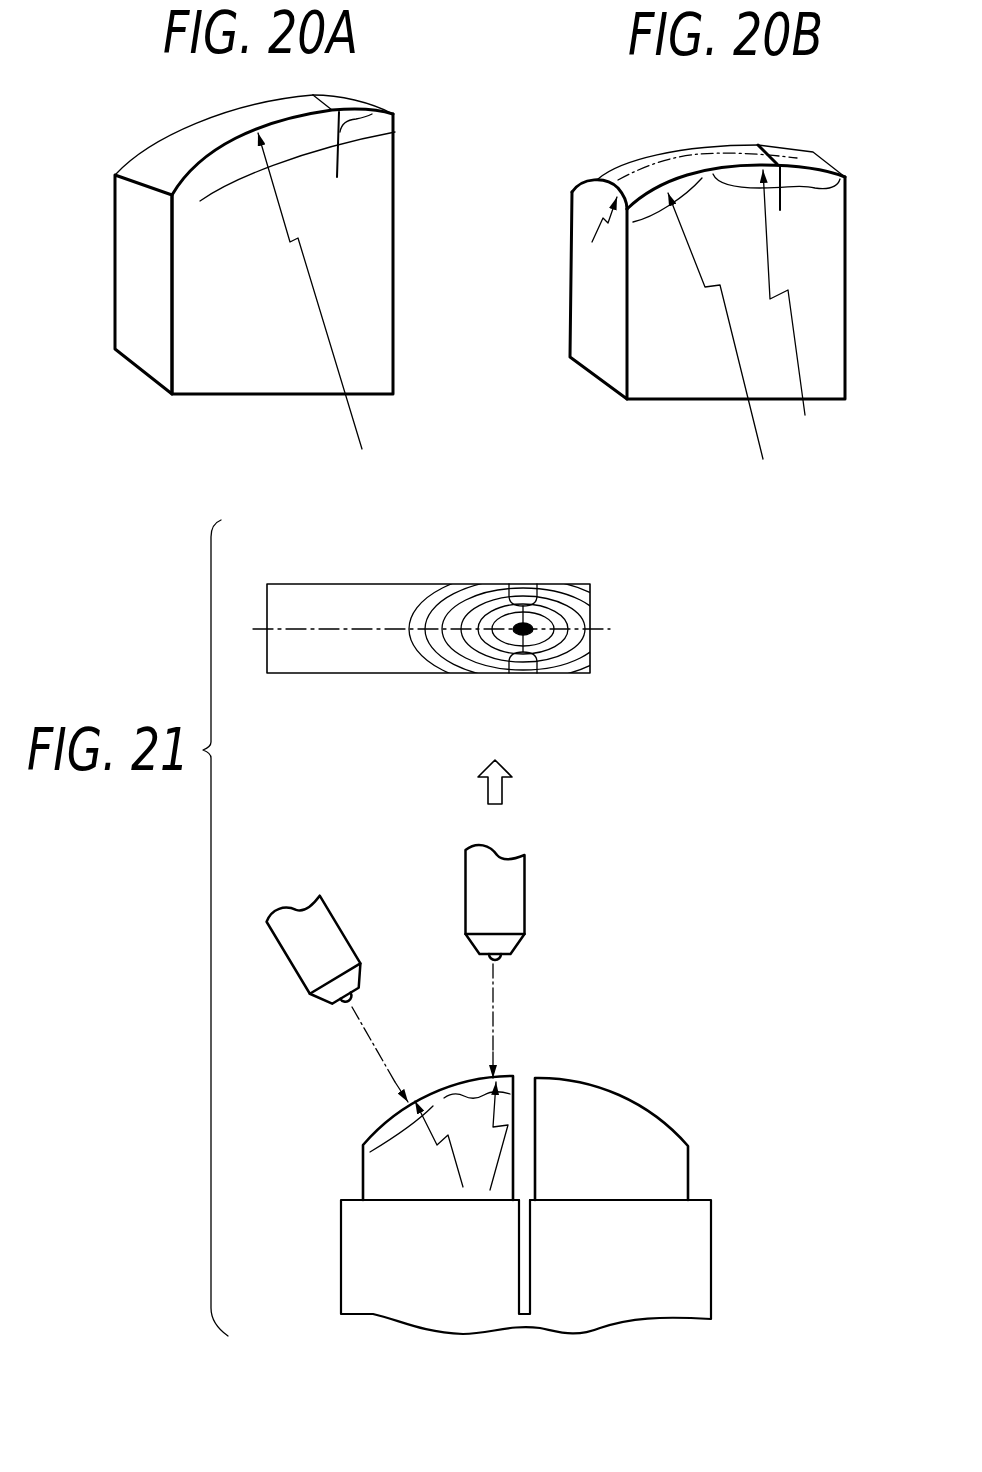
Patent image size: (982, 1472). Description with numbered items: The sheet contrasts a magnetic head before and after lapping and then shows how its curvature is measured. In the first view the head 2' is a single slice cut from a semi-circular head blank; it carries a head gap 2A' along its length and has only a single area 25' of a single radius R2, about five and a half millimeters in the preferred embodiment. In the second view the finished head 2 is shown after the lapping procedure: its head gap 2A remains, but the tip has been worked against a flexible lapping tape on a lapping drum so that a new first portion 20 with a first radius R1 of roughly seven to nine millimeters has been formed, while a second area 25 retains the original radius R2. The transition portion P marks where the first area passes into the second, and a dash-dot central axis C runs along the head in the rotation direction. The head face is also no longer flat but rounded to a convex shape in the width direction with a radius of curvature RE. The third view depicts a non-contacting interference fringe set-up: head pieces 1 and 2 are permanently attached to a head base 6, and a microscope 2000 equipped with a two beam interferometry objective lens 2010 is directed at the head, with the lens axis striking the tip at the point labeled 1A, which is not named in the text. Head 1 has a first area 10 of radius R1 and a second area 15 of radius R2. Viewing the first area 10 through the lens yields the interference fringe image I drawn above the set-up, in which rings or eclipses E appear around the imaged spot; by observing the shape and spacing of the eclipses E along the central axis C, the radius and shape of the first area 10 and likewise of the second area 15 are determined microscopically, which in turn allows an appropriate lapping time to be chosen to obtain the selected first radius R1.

In FIG. 20A, the head 2' is at (279, 244).
In FIG. 20A, the head gap 2A' is at (361, 121).
In FIG. 20A, the single area of a single radius 25' is at (297, 189).
In FIG. 20B, the head 2 is at (729, 272).
In FIG. 21, the head 2 is at (616, 1139).
In FIG. 20B, the head gap 2A is at (776, 156).
In FIG. 20B, the second area 25 is at (667, 225).
In FIG. 20B, the first portion 20 is at (803, 190).
In FIG. 20B, the first radius R1 is at (790, 306).
In FIG. 21, the first radius R1 is at (488, 1136).
In FIG. 20A, the second radius R2 is at (327, 332).
In FIG. 20B, the second radius R2 is at (733, 343).
In FIG. 21, the second radius R2 is at (437, 1179).
In FIG. 20B, the radius of curvature of head face RE is at (597, 228).
In FIG. 20B, the central axis C is at (623, 175).
In FIG. 21, the central axis C is at (322, 625).
In FIG. 20B, the transition portion P is at (683, 153).
In FIG. 21, the head 1 is at (368, 1145).
In FIG. 21, the irradiation point 1A is at (533, 620).
In FIG. 21, the first area 10 is at (477, 1109).
In FIG. 21, the second area 15 is at (408, 1127).
In FIG. 21, the head base 6 is at (711, 1283).
In FIG. 21, the microscope 2000 is at (522, 893).
In FIG. 21, the two beam interferometry objective lens 2010 is at (497, 960).
In FIG. 21, the eclipses E is at (483, 660).
In FIG. 21, the irradiated surface image I is at (602, 613).